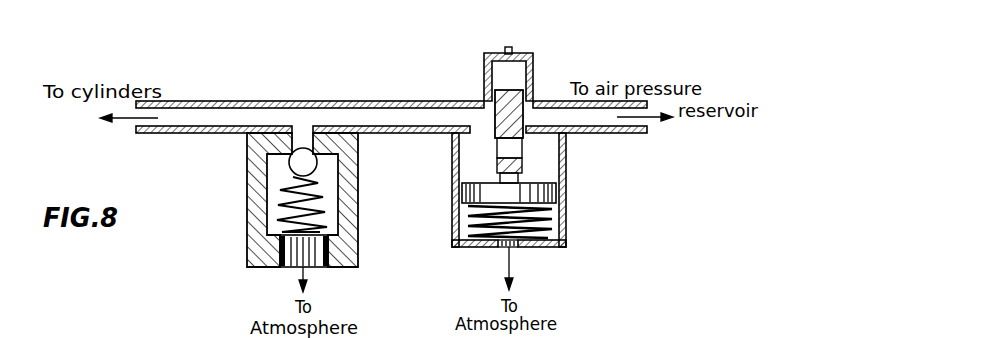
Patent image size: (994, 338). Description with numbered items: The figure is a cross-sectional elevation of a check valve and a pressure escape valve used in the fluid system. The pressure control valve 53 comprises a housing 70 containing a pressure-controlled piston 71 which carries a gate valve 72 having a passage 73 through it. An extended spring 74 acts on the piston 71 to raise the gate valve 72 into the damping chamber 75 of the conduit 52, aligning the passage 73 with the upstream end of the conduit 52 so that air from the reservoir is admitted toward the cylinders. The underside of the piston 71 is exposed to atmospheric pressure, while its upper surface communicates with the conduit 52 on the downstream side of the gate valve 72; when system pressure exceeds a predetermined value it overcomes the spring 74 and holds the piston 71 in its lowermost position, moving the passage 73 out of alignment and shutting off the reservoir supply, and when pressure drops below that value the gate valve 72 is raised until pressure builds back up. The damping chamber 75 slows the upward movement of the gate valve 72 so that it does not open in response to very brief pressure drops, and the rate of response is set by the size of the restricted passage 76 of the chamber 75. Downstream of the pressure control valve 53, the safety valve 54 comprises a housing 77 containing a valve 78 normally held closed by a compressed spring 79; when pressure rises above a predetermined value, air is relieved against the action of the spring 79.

The conduit 52 is at (243, 101).
The pressure control valve 53 is at (567, 222).
The safety valve 54 is at (359, 223).
The housing 70 is at (557, 186).
The piston 71 is at (505, 201).
The gate valve 72 is at (495, 120).
The passage 73 is at (503, 152).
The extended spring 74 is at (470, 223).
The damping chamber 75 is at (517, 75).
The restricted passage 76 is at (510, 47).
The housing 77 is at (248, 188).
The valve 78 is at (289, 167).
The compressed spring 79 is at (283, 208).